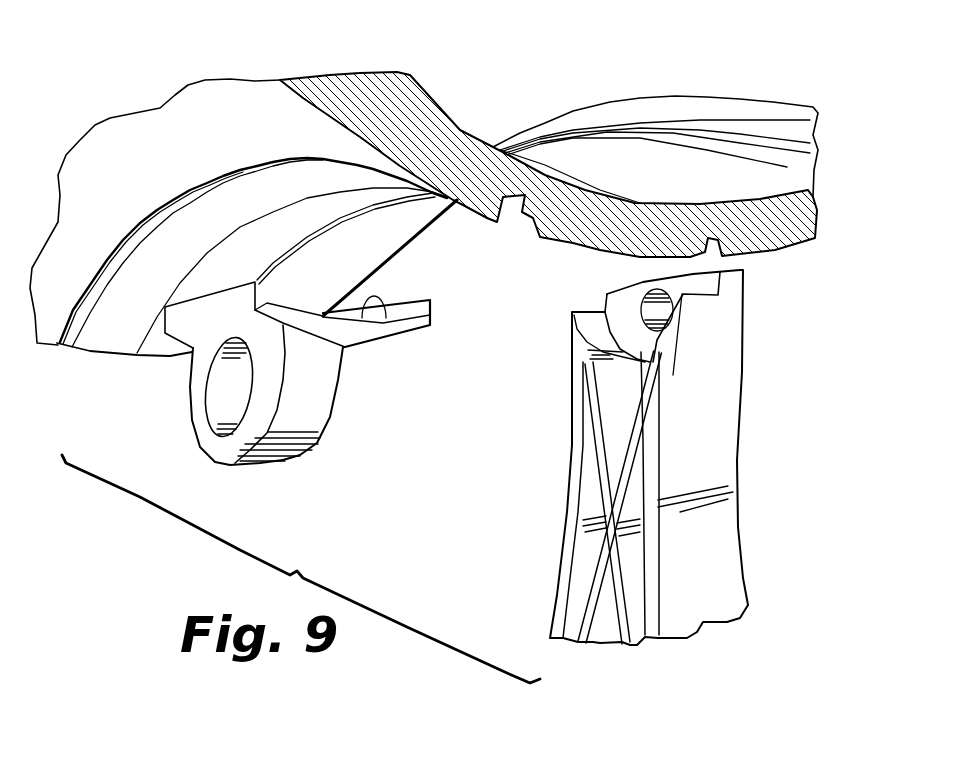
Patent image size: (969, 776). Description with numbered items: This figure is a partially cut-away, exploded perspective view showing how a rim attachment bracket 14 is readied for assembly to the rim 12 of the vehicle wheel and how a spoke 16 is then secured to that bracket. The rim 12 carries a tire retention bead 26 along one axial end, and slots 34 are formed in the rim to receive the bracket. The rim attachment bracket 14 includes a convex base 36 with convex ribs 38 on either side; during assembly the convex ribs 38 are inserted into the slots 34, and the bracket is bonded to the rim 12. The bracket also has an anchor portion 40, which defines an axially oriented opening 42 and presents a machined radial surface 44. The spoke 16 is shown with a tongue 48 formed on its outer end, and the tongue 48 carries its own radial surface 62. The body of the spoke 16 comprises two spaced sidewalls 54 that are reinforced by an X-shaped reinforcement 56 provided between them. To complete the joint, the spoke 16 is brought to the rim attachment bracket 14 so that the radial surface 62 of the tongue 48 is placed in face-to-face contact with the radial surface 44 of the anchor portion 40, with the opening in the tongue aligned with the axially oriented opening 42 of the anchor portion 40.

The rim 12 is at (152, 130).
The tire retention bead 26 is at (770, 112).
The slot 34 is at (120, 262).
The rim attachment bracket 14 is at (307, 427).
The anchor portion 40 is at (205, 444).
The axially oriented opening 42 is at (225, 400).
The radial surface 44 is at (343, 380).
The convex rib 38 is at (410, 297).
The convex base 36 is at (370, 293).
The spoke 16 is at (713, 380).
The tongue 48 is at (733, 288).
The radial surface 62 is at (621, 305).
The sidewall 54 is at (575, 482).
The X-shaped reinforcement 56 is at (640, 468).